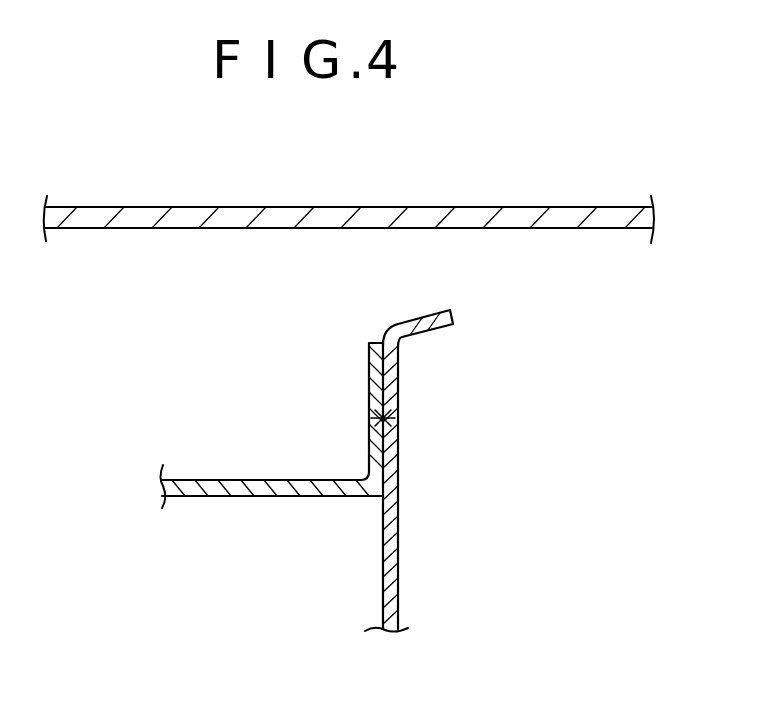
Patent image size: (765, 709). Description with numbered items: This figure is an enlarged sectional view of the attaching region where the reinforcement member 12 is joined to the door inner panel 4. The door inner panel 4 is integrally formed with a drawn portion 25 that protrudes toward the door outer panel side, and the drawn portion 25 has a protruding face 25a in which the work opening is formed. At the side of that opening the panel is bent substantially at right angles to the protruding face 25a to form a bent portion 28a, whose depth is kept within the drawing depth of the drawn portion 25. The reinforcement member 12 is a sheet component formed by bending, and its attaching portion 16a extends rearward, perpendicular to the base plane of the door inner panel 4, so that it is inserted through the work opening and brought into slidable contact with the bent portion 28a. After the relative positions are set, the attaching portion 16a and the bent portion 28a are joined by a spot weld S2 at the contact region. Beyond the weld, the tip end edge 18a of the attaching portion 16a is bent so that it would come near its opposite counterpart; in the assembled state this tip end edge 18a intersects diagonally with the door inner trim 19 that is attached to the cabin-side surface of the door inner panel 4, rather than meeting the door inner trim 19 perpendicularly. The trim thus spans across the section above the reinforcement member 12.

The door inner trim 19 is at (503, 212).
The tip end edge 18a is at (423, 318).
The bent portion 28a is at (373, 375).
The spot weld S2 is at (385, 417).
The protruding face 25a is at (347, 497).
The attaching portion 16a is at (392, 467).
The drawn portion 25 is at (304, 490).
The door inner panel 4 is at (210, 497).
The reinforcement member 12 is at (399, 575).